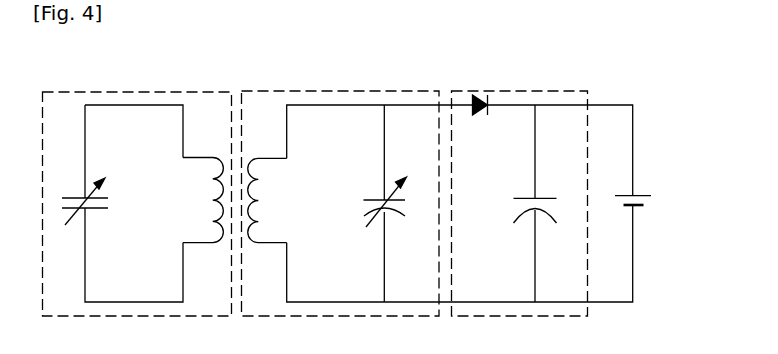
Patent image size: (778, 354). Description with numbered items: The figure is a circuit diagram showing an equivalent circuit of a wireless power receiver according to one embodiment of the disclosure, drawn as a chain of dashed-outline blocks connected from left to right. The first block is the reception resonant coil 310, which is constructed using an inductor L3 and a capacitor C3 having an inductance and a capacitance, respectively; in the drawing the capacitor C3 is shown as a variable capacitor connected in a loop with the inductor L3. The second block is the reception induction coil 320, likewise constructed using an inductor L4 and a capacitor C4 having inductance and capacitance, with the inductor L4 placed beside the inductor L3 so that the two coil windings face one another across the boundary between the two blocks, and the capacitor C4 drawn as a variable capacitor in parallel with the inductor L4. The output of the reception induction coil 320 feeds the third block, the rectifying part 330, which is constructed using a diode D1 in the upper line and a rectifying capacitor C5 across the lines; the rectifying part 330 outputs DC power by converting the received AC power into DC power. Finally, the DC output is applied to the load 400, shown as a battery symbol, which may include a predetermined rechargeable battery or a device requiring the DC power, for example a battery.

The reception resonant coil 310 is at (128, 91).
The reception induction coil 320 is at (316, 91).
The rectifying part 330 is at (528, 91).
The load 400 is at (647, 183).
The capacitor C3 is at (80, 214).
The inductor L3 is at (202, 200).
The inductor L4 is at (271, 200).
The capacitor C4 is at (400, 203).
The diode D1 is at (482, 90).
The rectifying capacitor C5 is at (550, 203).